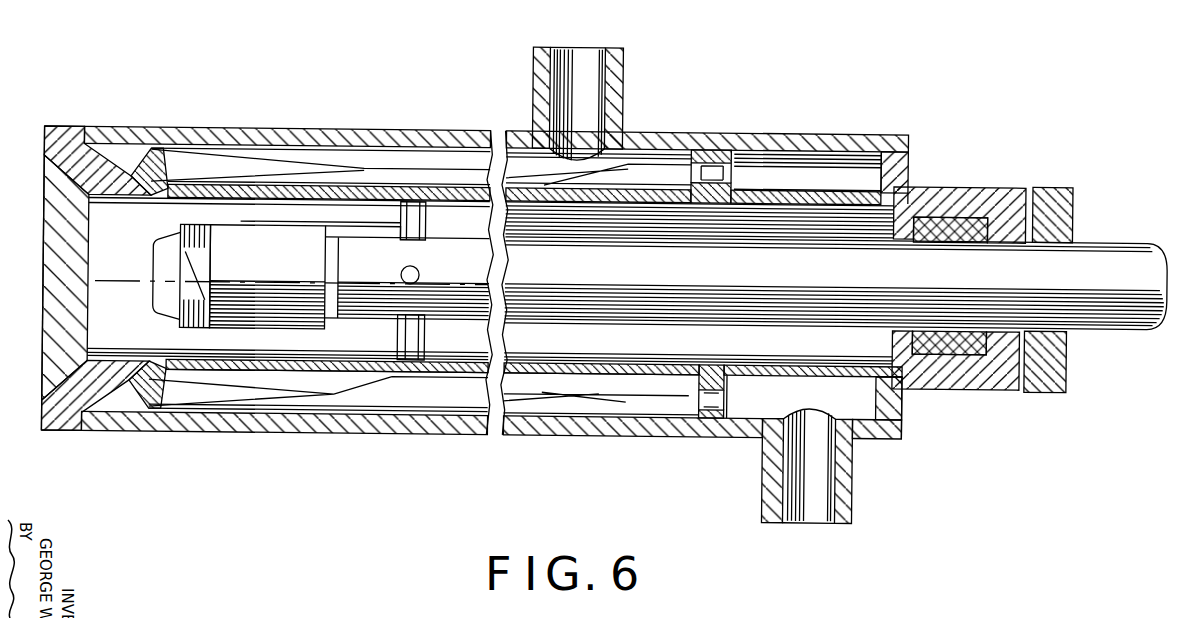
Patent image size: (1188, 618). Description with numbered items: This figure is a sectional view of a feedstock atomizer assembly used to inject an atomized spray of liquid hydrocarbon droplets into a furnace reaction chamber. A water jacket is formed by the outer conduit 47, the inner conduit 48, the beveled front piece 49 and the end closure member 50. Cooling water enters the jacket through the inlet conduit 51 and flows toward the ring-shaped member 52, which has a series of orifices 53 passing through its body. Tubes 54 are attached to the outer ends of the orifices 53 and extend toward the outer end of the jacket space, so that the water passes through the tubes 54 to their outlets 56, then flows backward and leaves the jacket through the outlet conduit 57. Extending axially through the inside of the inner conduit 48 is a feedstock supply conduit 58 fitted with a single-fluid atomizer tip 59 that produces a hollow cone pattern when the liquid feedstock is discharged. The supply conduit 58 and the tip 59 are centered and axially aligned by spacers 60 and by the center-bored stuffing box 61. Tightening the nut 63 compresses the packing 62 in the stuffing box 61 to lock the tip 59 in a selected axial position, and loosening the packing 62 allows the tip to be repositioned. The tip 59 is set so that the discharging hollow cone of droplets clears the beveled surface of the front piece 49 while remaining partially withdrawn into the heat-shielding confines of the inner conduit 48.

The outer conduit 47 is at (113, 131).
The inner conduit 48 is at (823, 360).
The beveled front piece 49 is at (45, 179).
The end closure member 50 is at (903, 154).
The inlet conduit 51 is at (853, 493).
The ring-shaped member 52 is at (716, 159).
The orifices 53 is at (714, 157).
The tubes 54 is at (360, 175).
The outlets 56 is at (140, 142).
The outlet conduit 57 is at (617, 64).
The feedstock supply conduit 58 is at (1102, 309).
The single-fluid atomizer tip 59 is at (253, 257).
The spacers 60 is at (417, 341).
The center-bored stuffing box 61 is at (983, 380).
The packing 62 is at (950, 220).
The nut 63 is at (1053, 383).